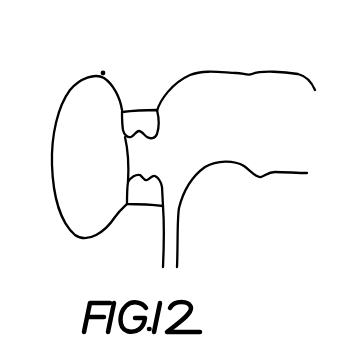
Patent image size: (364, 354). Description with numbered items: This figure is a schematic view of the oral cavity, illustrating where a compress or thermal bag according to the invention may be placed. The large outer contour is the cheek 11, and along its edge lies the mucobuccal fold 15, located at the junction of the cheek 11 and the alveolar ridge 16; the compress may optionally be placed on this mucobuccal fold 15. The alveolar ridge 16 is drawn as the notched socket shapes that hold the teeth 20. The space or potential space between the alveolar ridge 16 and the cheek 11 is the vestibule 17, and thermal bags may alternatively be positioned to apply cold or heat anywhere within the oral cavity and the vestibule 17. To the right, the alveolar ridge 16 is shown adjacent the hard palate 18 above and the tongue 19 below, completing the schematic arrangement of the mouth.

The cheek 11 is at (63, 99).
The mucobuccal fold 15 is at (103, 73).
The alveolar ridge 16 is at (145, 108).
The vestibule 17 is at (85, 192).
The hard palate 18 is at (228, 73).
The tongue 19 is at (232, 164).
The teeth 20 is at (135, 135).